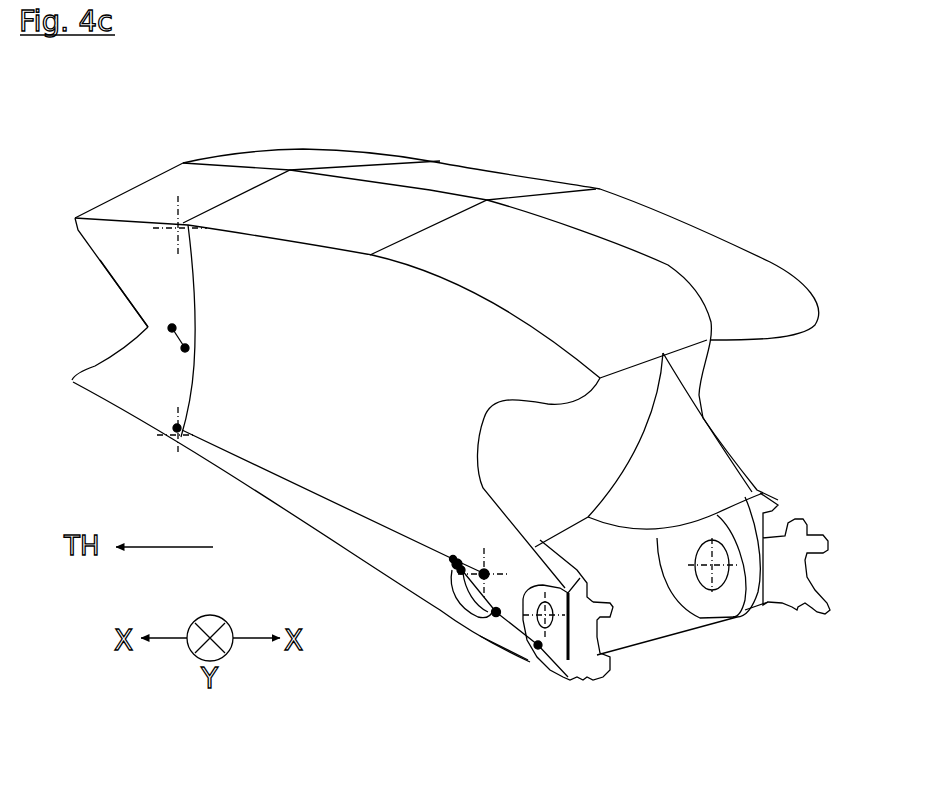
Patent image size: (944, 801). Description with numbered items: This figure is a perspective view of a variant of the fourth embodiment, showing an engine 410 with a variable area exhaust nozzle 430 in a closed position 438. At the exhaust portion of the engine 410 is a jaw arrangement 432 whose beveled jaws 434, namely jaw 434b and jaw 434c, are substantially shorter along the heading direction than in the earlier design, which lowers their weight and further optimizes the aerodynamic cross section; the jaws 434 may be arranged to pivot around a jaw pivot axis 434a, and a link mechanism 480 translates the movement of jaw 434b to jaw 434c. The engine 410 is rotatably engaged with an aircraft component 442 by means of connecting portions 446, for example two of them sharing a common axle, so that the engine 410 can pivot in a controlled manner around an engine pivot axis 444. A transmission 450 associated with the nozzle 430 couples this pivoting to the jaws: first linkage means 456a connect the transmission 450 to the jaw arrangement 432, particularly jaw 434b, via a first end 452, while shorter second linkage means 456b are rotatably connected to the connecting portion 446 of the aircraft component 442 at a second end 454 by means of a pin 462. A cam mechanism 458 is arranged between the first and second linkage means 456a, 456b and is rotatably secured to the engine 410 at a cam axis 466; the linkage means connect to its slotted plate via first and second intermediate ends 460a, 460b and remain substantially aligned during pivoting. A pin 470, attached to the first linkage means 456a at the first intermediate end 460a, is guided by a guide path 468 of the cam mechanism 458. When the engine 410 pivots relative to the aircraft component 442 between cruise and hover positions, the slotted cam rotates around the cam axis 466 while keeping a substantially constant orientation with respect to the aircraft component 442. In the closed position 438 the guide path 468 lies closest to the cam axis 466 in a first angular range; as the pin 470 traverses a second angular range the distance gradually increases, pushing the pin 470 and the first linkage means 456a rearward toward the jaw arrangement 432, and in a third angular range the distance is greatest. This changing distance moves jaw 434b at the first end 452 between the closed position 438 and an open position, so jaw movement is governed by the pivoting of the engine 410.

The engine 410 is at (661, 189).
The variable area exhaust nozzle 430 is at (190, 147).
The jaw arrangement 432 is at (169, 158).
The closed position 438 is at (76, 211).
The jaws 434 is at (192, 308).
The jaw pivot axis 434a is at (175, 221).
The jaw 434b is at (124, 344).
The jaw 434c is at (129, 302).
The link mechanism 480 is at (197, 353).
The first end 452 is at (171, 420).
The transmission 450 is at (277, 479).
The first linkage means 456a is at (332, 506).
The second linkage means 456b is at (511, 633).
The cam mechanism 458 is at (447, 596).
The first intermediate end 460a is at (449, 569).
The second intermediate end 460b is at (508, 601).
The pin 462 is at (536, 651).
The cam axis 466 is at (483, 563).
The guide path 468 is at (452, 558).
The pin 470 is at (481, 566).
The aircraft component 442 is at (806, 512).
The engine pivot axis 444 is at (704, 572).
The connecting portions 446 is at (617, 667).
The second end 454 is at (548, 660).